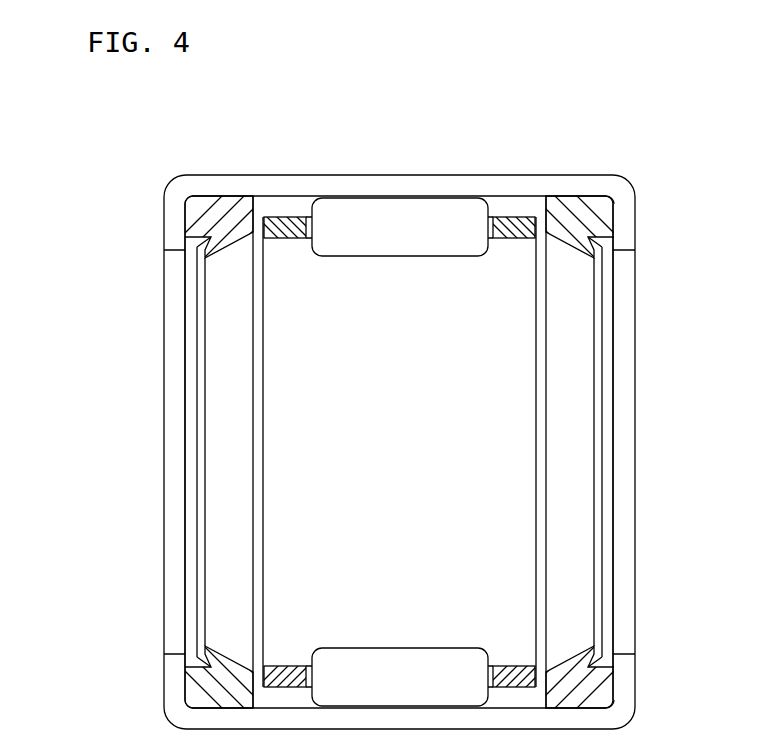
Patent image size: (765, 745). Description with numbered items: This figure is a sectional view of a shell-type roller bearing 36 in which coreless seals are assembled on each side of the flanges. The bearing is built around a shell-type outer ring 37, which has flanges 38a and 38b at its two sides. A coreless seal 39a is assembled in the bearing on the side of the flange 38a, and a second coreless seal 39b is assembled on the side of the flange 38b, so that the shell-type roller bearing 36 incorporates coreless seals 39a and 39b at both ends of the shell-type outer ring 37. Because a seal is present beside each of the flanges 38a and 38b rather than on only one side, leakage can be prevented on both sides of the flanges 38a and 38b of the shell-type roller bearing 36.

The shell-type roller bearing 36 is at (615, 146).
The shell-type outer ring 37 is at (407, 187).
The flange 38a is at (624, 228).
The flange 38b is at (173, 228).
The coreless seal 39a is at (578, 216).
The coreless seal 39b is at (218, 215).